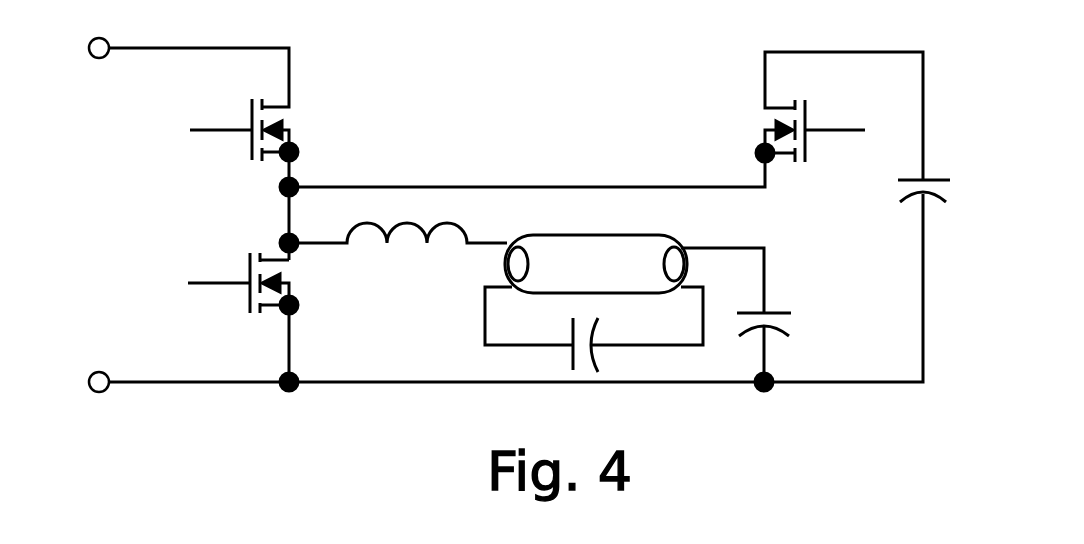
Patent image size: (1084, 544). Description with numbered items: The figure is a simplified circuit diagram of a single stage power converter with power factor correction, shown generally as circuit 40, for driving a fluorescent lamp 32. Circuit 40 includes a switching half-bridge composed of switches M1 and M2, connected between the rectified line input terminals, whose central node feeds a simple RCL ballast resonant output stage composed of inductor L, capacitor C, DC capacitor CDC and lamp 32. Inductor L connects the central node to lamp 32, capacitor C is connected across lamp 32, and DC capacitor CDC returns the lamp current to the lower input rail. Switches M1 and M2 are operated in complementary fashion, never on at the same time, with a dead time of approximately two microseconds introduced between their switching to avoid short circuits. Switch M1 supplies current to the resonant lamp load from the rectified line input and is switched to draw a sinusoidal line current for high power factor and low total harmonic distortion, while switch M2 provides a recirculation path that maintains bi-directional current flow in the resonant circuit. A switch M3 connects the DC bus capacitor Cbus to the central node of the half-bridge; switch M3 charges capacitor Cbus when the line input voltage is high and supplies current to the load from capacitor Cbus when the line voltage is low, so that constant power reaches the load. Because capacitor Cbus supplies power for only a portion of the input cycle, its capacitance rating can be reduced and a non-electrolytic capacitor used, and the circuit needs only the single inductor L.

The circuit 40 is at (512, 89).
The lamp 32 is at (597, 236).
The switch M1 is at (278, 138).
The switch M2 is at (275, 312).
The switch M3 is at (778, 126).
The inductor L is at (398, 253).
The capacitor C is at (594, 329).
The DC capacitor CDC is at (776, 319).
The DC bus capacitor Cbus is at (885, 212).